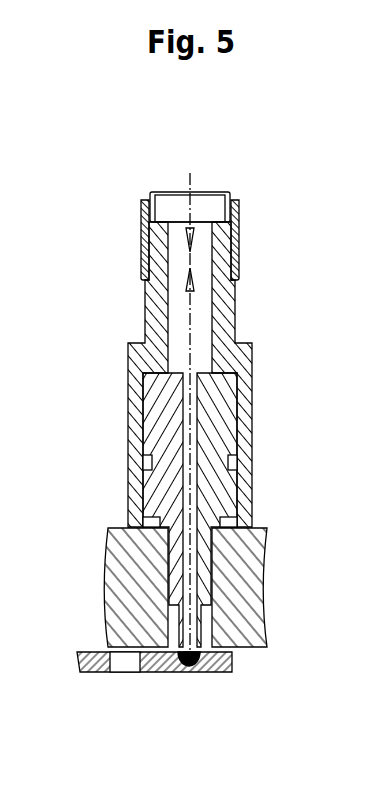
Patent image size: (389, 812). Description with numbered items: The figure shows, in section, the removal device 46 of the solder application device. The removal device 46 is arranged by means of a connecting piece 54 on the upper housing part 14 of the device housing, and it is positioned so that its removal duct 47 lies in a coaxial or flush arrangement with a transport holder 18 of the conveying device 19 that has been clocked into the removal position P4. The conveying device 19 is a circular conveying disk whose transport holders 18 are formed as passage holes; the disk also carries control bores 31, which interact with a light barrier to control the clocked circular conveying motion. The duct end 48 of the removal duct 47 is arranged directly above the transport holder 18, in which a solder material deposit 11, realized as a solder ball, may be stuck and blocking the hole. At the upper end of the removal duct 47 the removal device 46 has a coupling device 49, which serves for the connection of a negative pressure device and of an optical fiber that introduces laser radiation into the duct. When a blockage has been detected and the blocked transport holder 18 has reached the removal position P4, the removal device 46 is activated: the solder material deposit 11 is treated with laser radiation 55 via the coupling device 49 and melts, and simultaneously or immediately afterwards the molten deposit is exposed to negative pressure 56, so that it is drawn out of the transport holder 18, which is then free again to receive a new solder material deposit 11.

The laser radiation 55 is at (192, 181).
The coupling device 49 is at (245, 228).
The negative pressure 56 is at (192, 305).
The removal device 46 is at (272, 302).
The upper housing part 14 is at (255, 535).
The removal duct 47 is at (192, 565).
The removal position P4 is at (205, 645).
The conveying device 19 is at (232, 662).
The connecting piece 54 is at (158, 568).
The duct end 48 is at (162, 637).
The control bore 31 is at (122, 673).
The solder material deposit 11 is at (185, 667).
The transport holder 18 is at (200, 670).